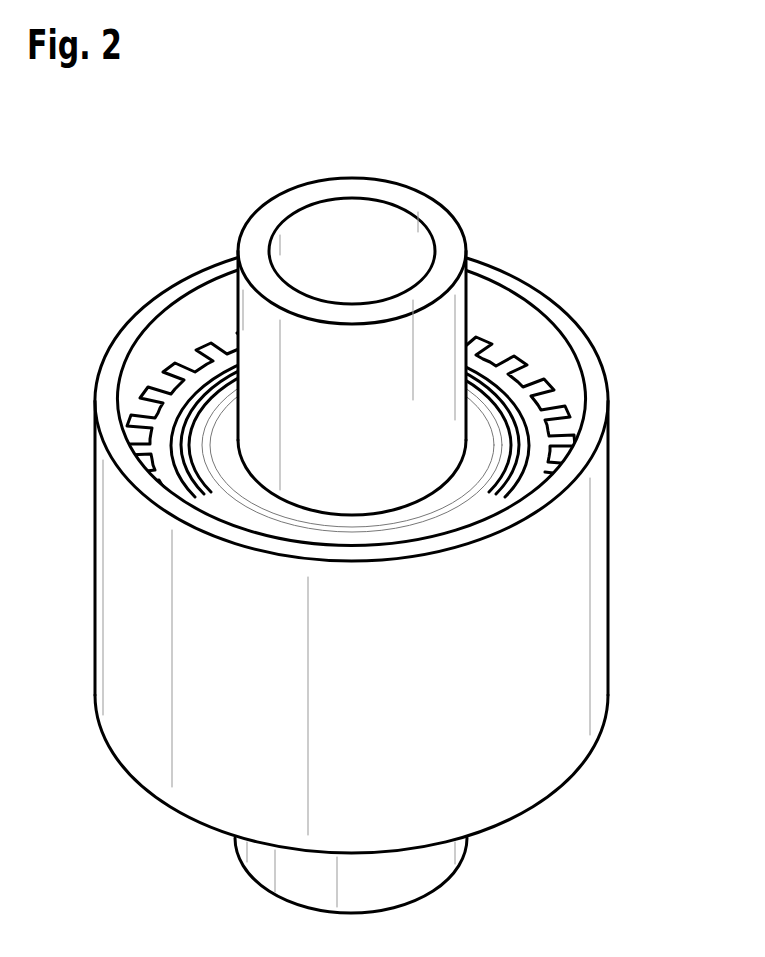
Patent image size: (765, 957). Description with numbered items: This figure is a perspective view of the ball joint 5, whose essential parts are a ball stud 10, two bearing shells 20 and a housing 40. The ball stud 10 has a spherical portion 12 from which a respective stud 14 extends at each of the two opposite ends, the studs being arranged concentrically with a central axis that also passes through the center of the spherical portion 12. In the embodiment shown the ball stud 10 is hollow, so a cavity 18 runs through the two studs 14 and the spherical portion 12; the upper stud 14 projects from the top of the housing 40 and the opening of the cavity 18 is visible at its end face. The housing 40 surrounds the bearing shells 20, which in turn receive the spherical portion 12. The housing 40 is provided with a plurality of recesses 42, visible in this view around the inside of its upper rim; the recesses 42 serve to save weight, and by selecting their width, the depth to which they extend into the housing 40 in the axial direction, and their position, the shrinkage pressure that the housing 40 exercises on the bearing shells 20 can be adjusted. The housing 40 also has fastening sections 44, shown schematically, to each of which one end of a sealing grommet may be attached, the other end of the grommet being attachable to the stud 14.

The ball joint 5 is at (581, 184).
The ball stud 10 is at (398, 162).
The spherical portion 12 is at (487, 467).
The stud 14 is at (450, 243).
The cavity 18 is at (334, 220).
The bearing shells 20 is at (483, 400).
The housing 40 is at (573, 558).
The recesses 42 is at (177, 370).
The fastening sections 44 is at (180, 292).